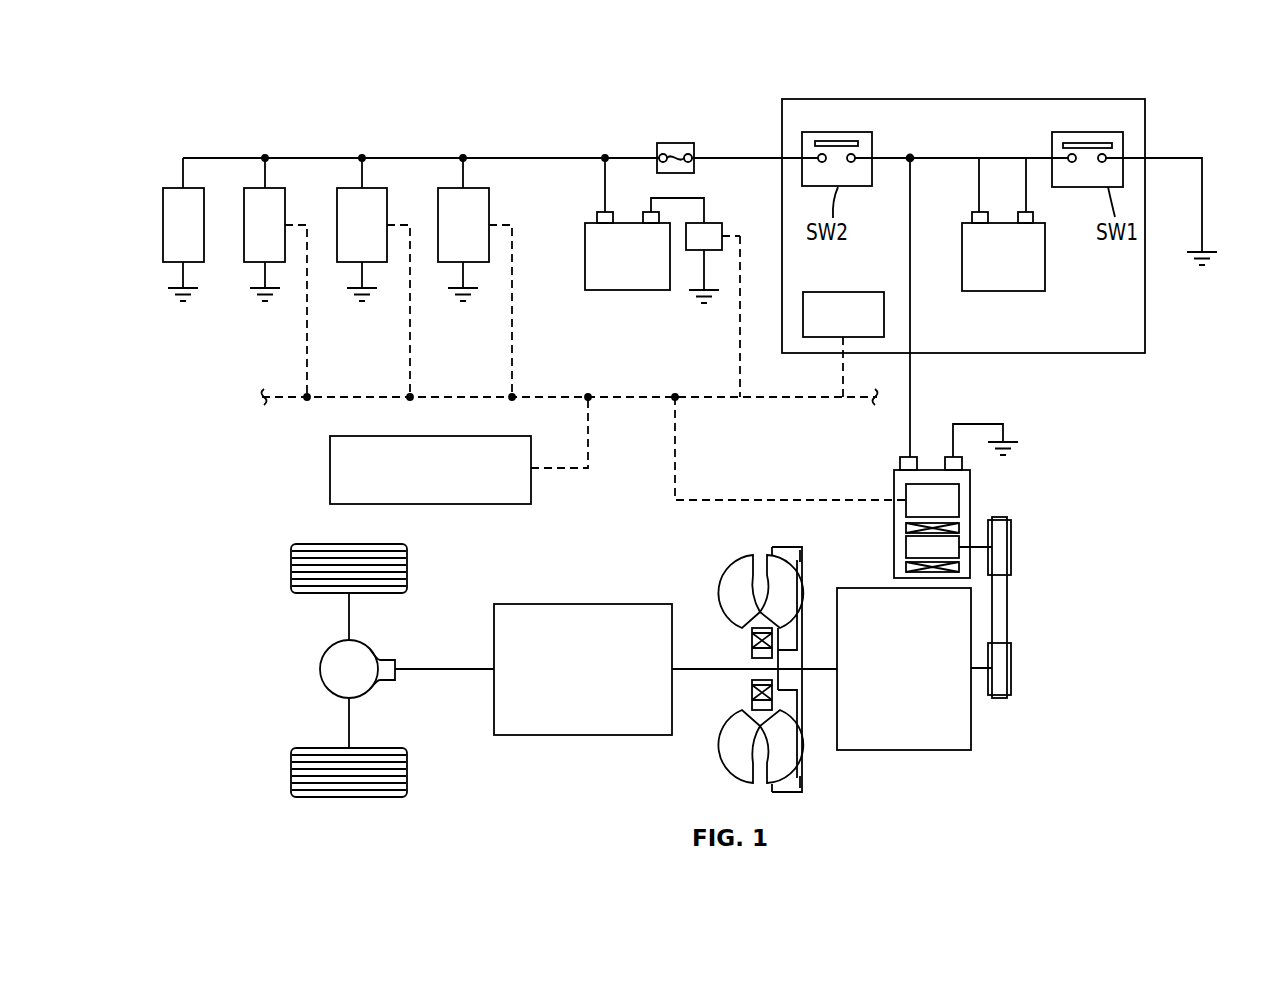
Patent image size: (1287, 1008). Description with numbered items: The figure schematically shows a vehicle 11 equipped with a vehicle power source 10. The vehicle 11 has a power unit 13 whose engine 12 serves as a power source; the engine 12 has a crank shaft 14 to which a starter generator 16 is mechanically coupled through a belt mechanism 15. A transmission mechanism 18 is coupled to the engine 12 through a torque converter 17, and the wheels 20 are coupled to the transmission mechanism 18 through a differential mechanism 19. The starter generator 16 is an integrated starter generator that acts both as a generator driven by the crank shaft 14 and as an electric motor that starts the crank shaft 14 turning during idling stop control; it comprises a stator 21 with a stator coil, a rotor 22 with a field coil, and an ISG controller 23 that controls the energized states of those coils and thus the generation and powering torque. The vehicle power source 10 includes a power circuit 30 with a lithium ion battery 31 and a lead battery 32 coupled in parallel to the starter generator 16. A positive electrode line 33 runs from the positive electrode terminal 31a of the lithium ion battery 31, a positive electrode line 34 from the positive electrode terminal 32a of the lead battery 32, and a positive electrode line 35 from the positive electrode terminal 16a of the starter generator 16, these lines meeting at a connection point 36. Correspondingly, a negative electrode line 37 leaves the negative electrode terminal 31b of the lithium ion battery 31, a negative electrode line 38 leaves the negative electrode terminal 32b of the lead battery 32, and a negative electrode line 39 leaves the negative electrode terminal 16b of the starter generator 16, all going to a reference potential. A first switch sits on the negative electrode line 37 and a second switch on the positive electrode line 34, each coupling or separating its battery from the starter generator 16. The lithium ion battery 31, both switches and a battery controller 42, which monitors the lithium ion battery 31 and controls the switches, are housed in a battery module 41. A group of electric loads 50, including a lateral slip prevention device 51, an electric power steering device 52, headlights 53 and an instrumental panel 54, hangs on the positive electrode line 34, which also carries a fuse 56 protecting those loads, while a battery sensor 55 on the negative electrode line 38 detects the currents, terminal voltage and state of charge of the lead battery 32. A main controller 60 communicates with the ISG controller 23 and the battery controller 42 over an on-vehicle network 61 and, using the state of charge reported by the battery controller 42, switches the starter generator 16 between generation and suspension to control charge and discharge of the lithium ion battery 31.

The vehicle power source 10 is at (203, 92).
The vehicle 11 is at (208, 488).
The engine 12 is at (972, 718).
The power unit 13 is at (997, 753).
The crank shaft 14 is at (823, 667).
The belt mechanism 15 is at (1011, 612).
The starter generator 16 is at (915, 527).
The positive electrode terminal 16a is at (897, 459).
The negative electrode terminal 16b is at (963, 463).
The torque converter 17 is at (735, 755).
The transmission mechanism 18 is at (585, 604).
The differential mechanism 19 is at (320, 669).
The wheels 20 is at (291, 566).
The stator 21 is at (932, 573).
The rotor 22 is at (906, 548).
The ISG controller 23 is at (960, 501).
The power circuit 30 is at (1192, 127).
The lithium ion battery 31 is at (1033, 242).
The positive electrode terminal 31a is at (982, 225).
The negative electrode terminal 31b is at (1035, 215).
The lead battery 32 is at (602, 222).
The positive electrode terminal 32a is at (597, 217).
The negative electrode terminal 32b is at (650, 224).
The positive electrode line 33 is at (960, 158).
The positive electrode line 34 is at (550, 155).
The positive electrode line 35 is at (912, 398).
The connection point 36 is at (910, 155).
The negative electrode line 37 is at (1043, 158).
The negative electrode line 38 is at (705, 202).
The negative electrode line 39 is at (1010, 428).
The battery module 41 is at (1152, 316).
The battery controller 42 is at (855, 292).
The group of electric loads 50 is at (226, 342).
The lateral slip prevention device 51 is at (445, 264).
The electric power steering device 52 is at (344, 264).
The headlights 53 is at (251, 264).
The instrumental panel 54 is at (170, 264).
The battery sensor 55 is at (722, 229).
The fuse 56 is at (677, 141).
The main controller 60 is at (330, 455).
The on-vehicle network 61 is at (625, 396).